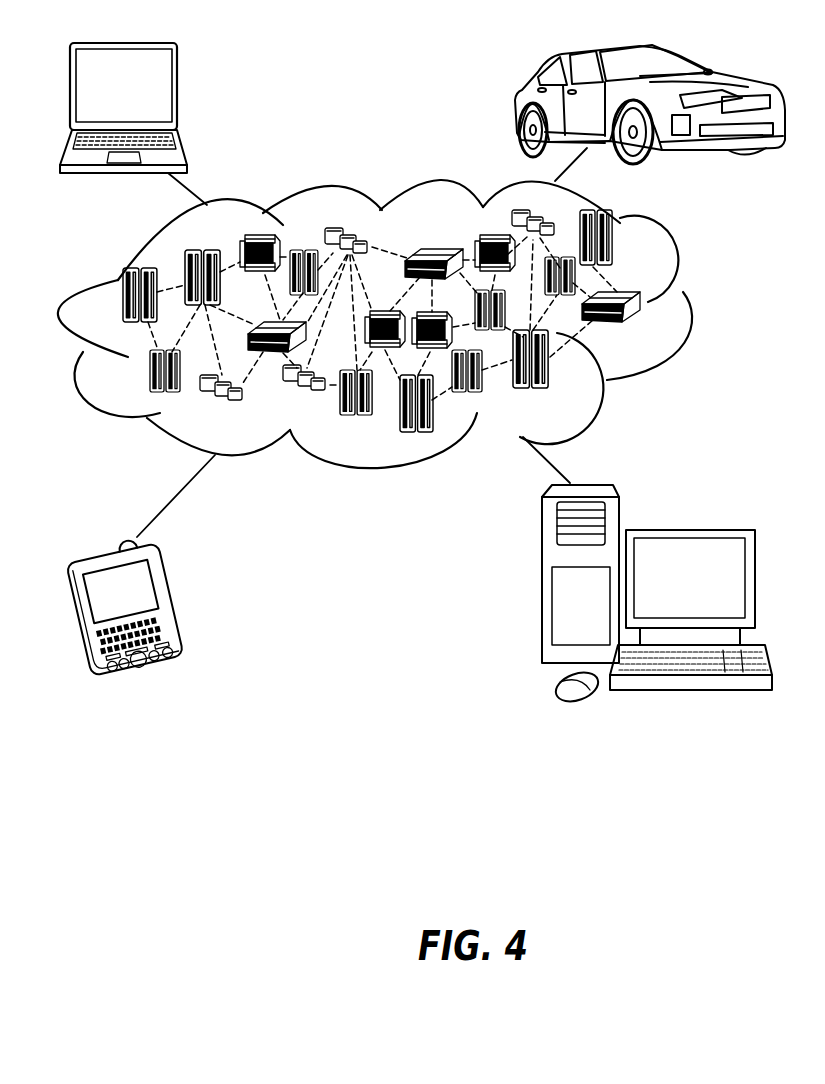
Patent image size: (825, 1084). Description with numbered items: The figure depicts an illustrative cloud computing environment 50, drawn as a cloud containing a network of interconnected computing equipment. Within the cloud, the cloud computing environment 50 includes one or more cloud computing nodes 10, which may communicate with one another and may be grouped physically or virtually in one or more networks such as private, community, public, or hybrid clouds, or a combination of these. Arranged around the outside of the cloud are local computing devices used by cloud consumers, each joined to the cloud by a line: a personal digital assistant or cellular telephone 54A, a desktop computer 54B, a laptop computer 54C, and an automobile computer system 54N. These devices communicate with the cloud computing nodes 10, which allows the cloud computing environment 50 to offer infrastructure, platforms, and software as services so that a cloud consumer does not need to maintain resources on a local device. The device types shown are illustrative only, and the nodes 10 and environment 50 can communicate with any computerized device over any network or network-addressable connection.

The cloud computing node 10 is at (708, 296).
The cloud computing environment 50 is at (396, 324).
The personal digital assistant or cellular telephone 54A is at (172, 600).
The desktop computer 54B is at (687, 528).
The laptop computer 54C is at (177, 92).
The automobile computer system 54N is at (517, 102).